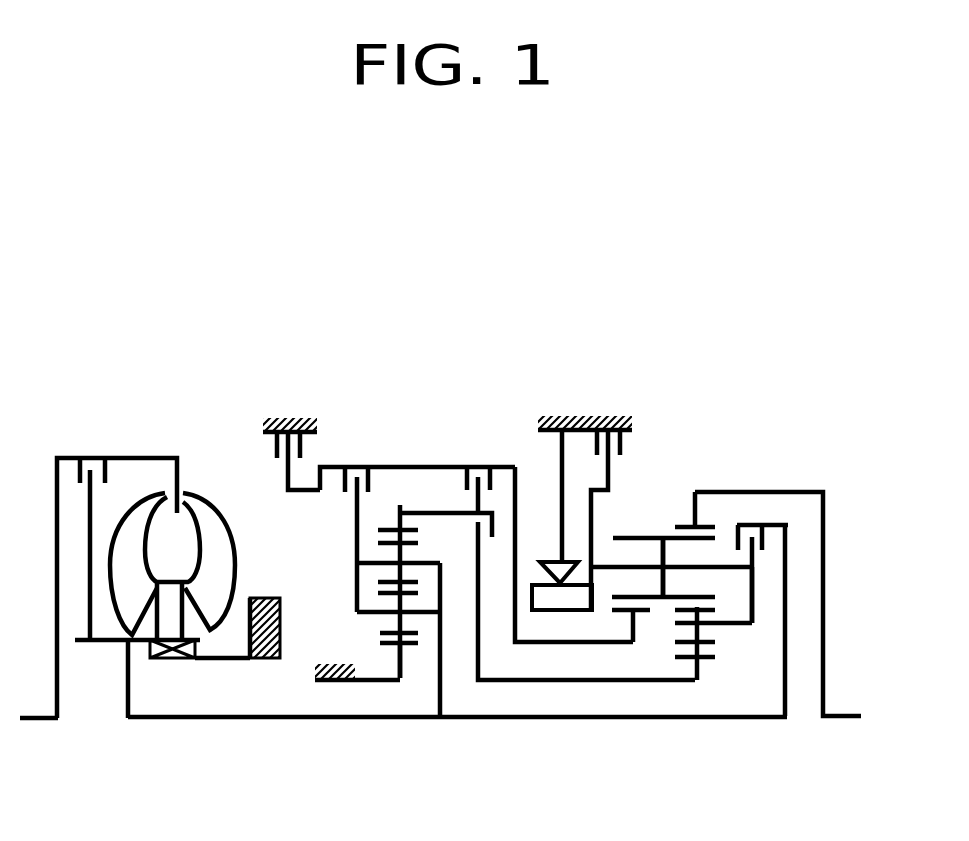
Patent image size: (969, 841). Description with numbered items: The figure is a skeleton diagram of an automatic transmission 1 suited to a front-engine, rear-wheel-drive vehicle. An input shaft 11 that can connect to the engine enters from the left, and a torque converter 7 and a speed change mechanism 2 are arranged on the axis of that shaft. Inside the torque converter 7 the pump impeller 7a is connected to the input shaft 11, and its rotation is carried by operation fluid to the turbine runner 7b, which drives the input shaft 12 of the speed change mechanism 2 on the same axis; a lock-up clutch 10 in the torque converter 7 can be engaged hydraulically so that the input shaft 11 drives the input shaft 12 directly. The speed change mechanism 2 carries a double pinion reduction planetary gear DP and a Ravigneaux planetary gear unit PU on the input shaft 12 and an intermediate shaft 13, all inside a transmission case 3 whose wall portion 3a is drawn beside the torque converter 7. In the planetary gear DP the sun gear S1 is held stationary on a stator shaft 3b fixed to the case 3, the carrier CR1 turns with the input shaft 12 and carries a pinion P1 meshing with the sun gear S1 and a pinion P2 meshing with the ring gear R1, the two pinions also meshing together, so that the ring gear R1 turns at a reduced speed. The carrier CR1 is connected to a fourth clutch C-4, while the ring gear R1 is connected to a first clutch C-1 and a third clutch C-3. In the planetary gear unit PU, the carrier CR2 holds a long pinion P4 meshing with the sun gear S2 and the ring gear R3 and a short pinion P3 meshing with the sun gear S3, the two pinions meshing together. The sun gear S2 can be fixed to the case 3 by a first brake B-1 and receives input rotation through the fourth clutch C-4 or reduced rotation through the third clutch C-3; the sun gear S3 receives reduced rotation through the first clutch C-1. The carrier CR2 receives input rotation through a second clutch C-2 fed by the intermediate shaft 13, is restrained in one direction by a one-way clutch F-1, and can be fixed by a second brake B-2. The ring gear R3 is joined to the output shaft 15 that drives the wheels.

The automatic transmission 1 is at (466, 319).
The speed change mechanism 2 is at (502, 410).
The transmission case 3 is at (307, 426).
The case partition wall 3a is at (256, 598).
The stator shaft 3b is at (323, 663).
The torque converter 7 is at (195, 524).
The pump impeller 7a is at (207, 518).
The turbine runner 7b is at (137, 513).
The lock-up clutch 10 is at (88, 455).
The input shaft 11 is at (43, 716).
The input shaft 12 is at (253, 716).
The intermediate shaft 13 is at (652, 718).
The output shaft 15 is at (830, 711).
The planetary gear DP is at (403, 502).
The planetary gear unit PU is at (634, 517).
The sun gear S1 is at (405, 650).
The carrier CR1 is at (355, 578).
The ring gear R1 is at (390, 525).
The pinion P1 is at (387, 632).
The pinion P2 is at (408, 545).
The short pinion P3 is at (707, 638).
The long pinion P4 is at (672, 540).
The sun gear S2 is at (640, 613).
The sun gear S3 is at (705, 658).
The ring gear R3 is at (683, 521).
The carrier CR2 is at (752, 572).
The first clutch C-1 is at (547, 582).
The second clutch C-2 is at (764, 605).
The third clutch C-3 is at (501, 475).
The fourth clutch C-4 is at (380, 525).
The first brake B-1 is at (291, 441).
The second brake B-2 is at (604, 499).
The one-way clutch F-1 is at (642, 535).